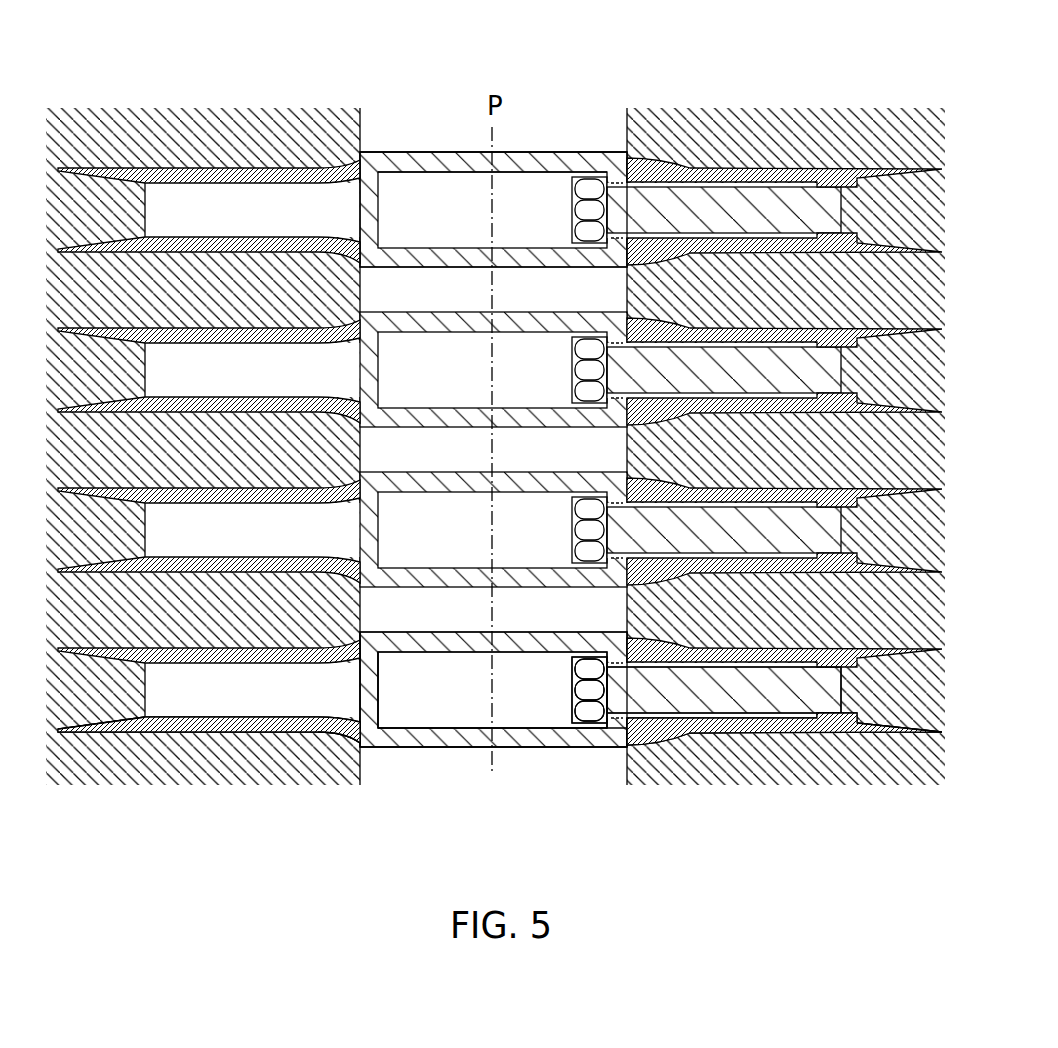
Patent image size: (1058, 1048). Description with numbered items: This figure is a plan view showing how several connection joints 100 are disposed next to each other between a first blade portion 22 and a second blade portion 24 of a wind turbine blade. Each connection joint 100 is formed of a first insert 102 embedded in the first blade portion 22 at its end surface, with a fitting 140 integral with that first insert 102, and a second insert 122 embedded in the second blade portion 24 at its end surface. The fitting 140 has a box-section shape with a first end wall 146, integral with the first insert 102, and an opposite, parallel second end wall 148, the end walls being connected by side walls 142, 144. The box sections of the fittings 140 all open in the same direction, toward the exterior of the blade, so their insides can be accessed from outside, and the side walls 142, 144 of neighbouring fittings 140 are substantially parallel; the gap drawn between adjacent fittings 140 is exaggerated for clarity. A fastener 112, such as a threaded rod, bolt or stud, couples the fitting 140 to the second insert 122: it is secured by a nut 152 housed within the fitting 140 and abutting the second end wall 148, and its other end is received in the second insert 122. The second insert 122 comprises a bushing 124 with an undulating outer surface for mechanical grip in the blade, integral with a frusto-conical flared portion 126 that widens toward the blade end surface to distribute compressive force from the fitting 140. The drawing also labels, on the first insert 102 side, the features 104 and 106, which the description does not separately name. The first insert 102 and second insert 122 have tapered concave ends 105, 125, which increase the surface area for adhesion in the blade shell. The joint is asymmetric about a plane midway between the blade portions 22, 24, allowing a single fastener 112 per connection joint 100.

The first blade portion 22 is at (203, 434).
The second blade portion 24 is at (786, 448).
The connection joint 100 is at (493, 151).
The first insert 102 is at (270, 774).
The first flange 104 is at (209, 785).
The concave end 105 is at (94, 785).
The first slot 106 is at (333, 794).
The fastener 112 is at (724, 768).
The second insert 122 is at (695, 777).
The bushing 124 is at (784, 774).
The concave end 125 is at (907, 778).
The flared portion 126 is at (657, 780).
The fitting 140 is at (493, 749).
The side wall 142 is at (493, 776).
The side wall 144 is at (493, 123).
The first end wall 146 is at (390, 727).
The second end wall 148 is at (601, 796).
The nut 152 is at (577, 725).